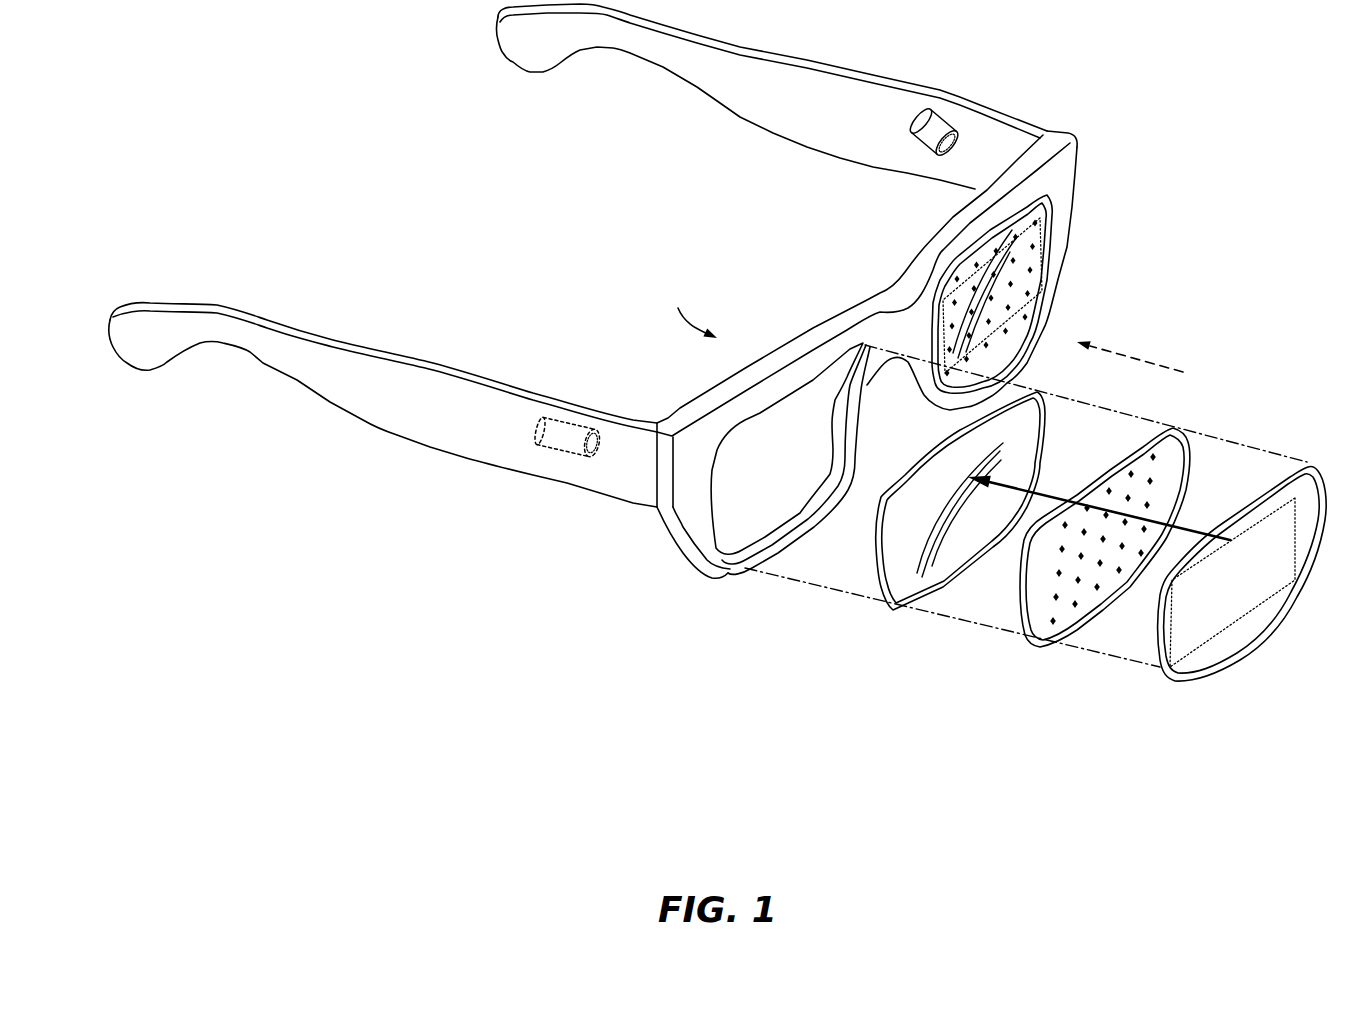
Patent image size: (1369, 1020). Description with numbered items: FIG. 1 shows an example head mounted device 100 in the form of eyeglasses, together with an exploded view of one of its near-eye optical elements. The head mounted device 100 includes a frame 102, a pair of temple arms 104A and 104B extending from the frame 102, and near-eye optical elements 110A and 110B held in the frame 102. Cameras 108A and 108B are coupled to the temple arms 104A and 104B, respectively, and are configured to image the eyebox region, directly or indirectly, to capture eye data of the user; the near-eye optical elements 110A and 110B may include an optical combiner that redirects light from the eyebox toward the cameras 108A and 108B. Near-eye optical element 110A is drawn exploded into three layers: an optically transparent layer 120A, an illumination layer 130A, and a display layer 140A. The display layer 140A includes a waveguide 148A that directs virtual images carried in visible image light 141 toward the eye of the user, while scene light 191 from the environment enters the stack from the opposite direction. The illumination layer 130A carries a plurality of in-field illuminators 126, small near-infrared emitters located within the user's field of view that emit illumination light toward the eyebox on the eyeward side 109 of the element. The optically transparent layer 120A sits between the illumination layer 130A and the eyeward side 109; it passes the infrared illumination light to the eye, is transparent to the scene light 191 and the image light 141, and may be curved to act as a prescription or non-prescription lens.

The head mounted device 100 is at (1300, 104).
The frame 102 is at (912, 338).
The temple arm 104A is at (482, 433).
The temple arm 104B is at (817, 115).
The camera 108A is at (560, 432).
The camera 108B is at (950, 121).
The eyeward side 109 is at (671, 284).
The near-eye optical element 110A is at (1155, 750).
The near-eye optical element 110B is at (1040, 281).
The optically transparent layer 120A is at (893, 612).
The in-field illuminators 126 is at (1056, 597).
The illumination layer 130A is at (1036, 650).
The display layer 140A is at (1172, 683).
The image light 141 is at (1050, 463).
The waveguide 148A is at (1193, 570).
The scene light 191 is at (1176, 371).